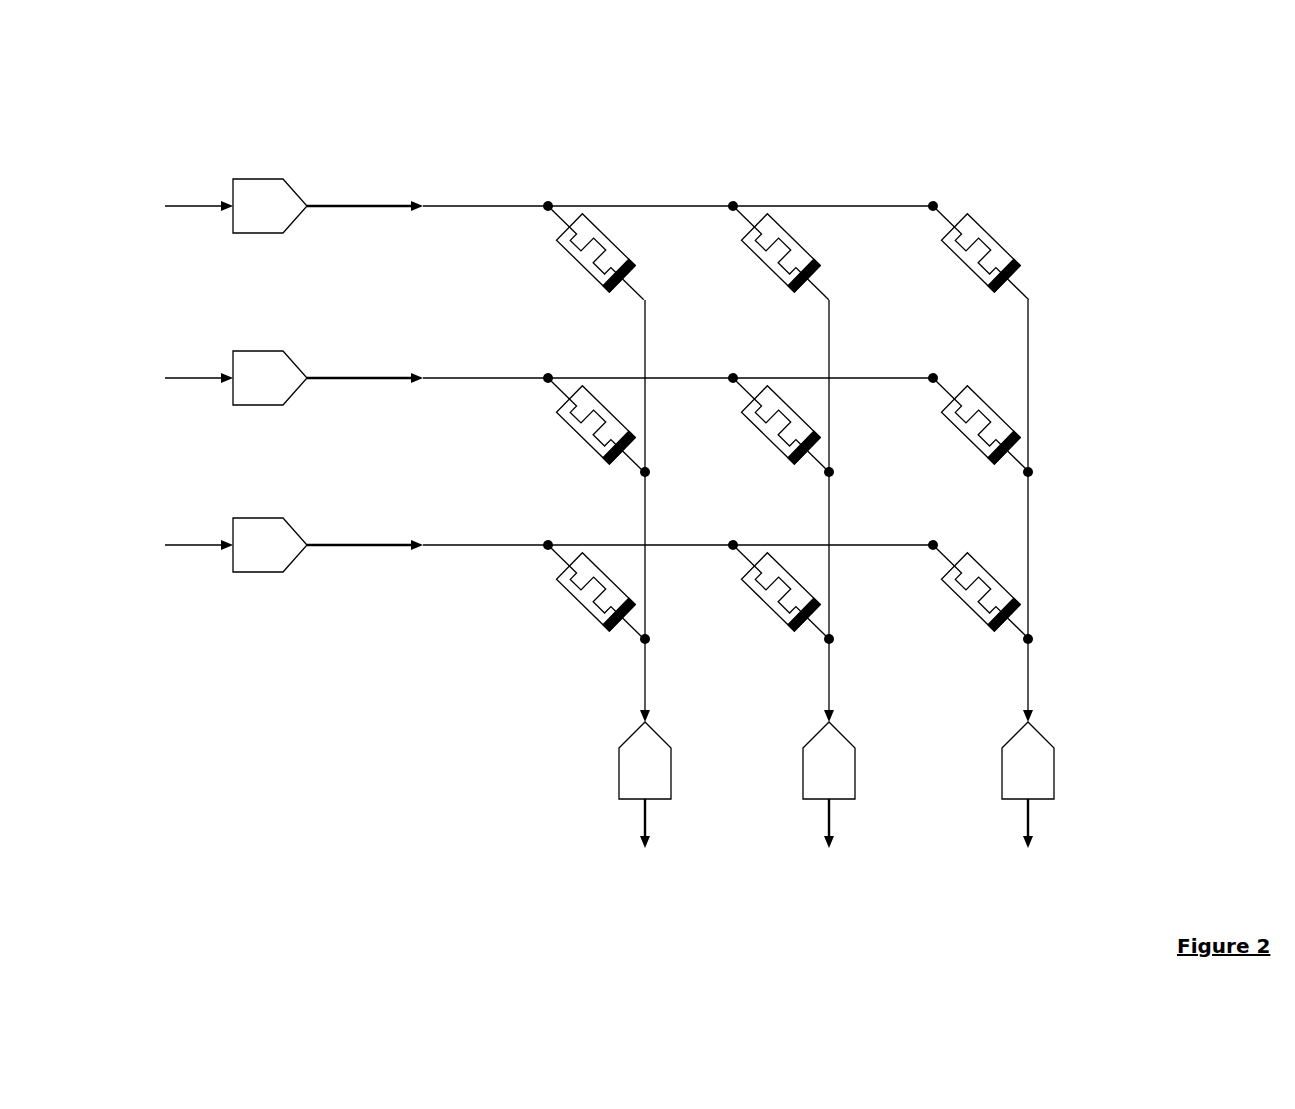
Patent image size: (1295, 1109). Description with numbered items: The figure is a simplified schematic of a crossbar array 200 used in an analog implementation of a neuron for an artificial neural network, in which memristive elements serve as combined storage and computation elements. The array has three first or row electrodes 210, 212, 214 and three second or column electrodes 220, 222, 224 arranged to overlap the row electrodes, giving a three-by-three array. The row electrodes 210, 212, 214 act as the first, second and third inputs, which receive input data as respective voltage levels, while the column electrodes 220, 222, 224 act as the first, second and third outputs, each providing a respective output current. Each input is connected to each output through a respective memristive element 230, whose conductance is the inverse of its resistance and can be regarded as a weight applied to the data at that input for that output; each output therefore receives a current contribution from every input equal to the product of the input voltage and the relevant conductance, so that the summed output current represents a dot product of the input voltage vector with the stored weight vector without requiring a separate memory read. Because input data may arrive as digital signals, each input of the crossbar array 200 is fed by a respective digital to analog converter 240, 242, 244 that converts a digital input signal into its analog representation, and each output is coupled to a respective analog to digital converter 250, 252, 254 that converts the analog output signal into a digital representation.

The crossbar array 200 is at (588, 381).
The row electrode 210 is at (472, 206).
The row electrode 212 is at (472, 378).
The row electrode 214 is at (472, 545).
The column electrode 220 is at (645, 338).
The column electrode 222 is at (829, 338).
The column electrode 224 is at (1028, 345).
The memristive element 230 is at (1006, 249).
The digital to analog converter 240 is at (262, 192).
The digital to analog converter 242 is at (262, 364).
The digital to analog converter 244 is at (262, 531).
The analog to digital converter 250 is at (663, 777).
The analog to digital converter 252 is at (847, 777).
The analog to digital converter 254 is at (1046, 777).